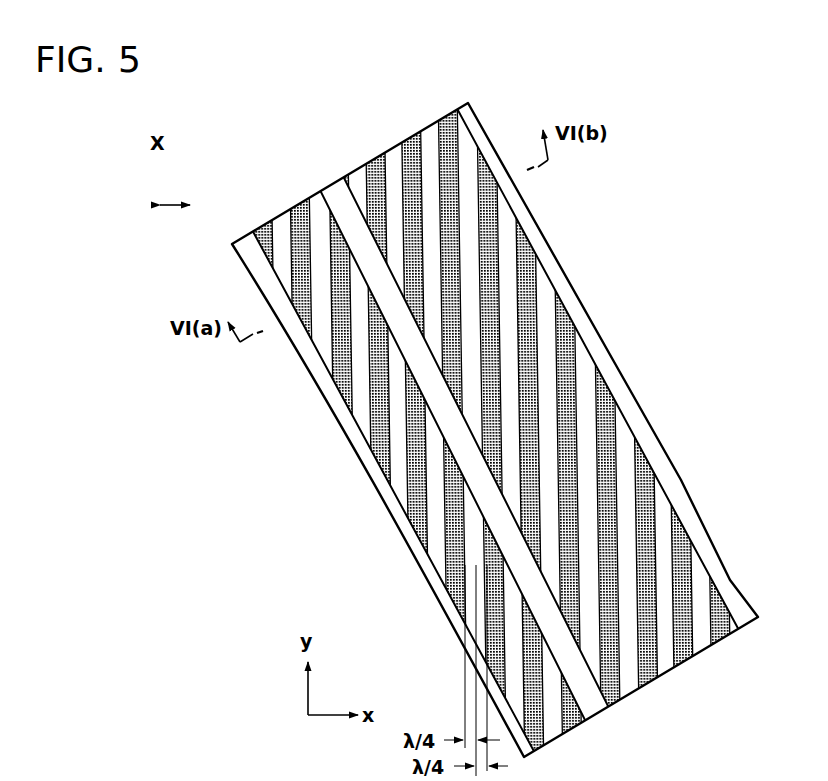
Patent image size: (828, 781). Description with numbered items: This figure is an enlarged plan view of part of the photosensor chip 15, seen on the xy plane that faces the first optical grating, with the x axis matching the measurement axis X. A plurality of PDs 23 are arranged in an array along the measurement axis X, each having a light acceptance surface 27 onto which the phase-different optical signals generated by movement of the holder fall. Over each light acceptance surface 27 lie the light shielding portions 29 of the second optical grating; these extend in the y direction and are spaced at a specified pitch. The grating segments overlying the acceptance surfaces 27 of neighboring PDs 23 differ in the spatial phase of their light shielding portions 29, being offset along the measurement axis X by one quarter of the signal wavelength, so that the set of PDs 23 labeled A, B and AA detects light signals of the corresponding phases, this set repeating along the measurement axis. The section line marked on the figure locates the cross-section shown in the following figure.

The photosensor chip 15 is at (464, 402).
The PD 23 is at (279, 208).
The light acceptance surface 27 is at (325, 366).
The light shielding portion 29 is at (318, 333).